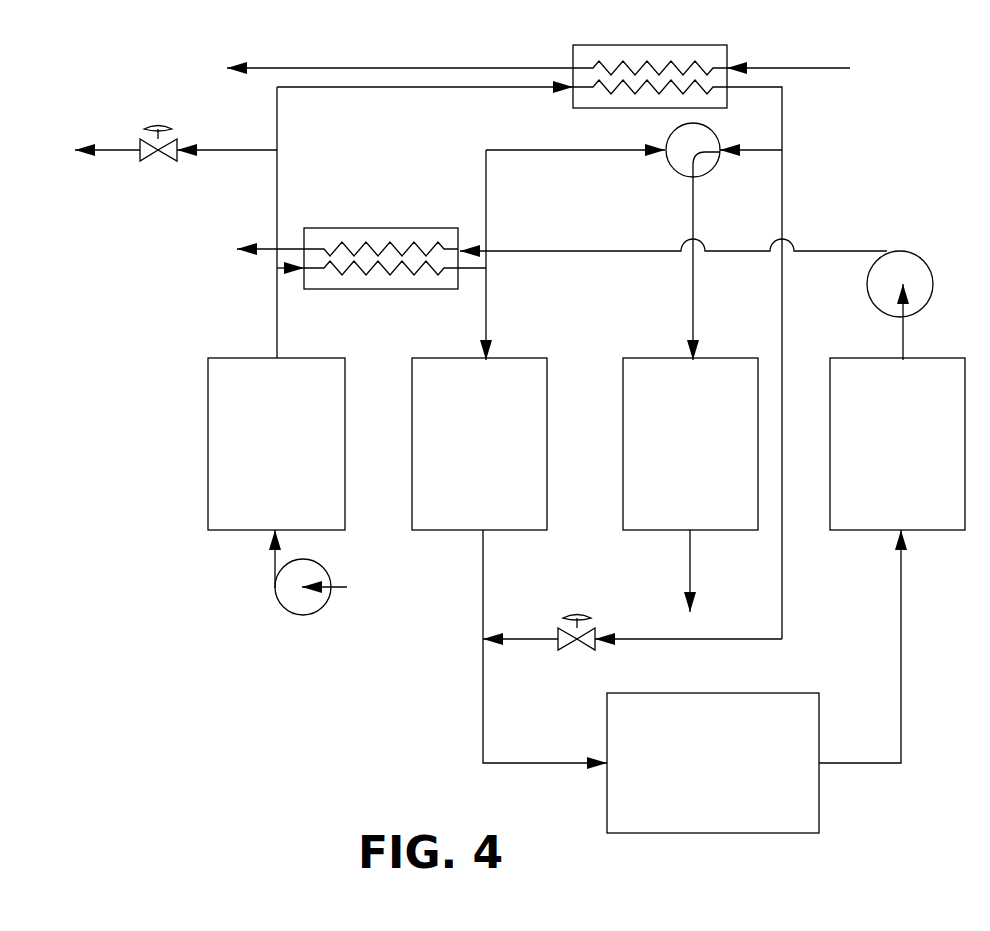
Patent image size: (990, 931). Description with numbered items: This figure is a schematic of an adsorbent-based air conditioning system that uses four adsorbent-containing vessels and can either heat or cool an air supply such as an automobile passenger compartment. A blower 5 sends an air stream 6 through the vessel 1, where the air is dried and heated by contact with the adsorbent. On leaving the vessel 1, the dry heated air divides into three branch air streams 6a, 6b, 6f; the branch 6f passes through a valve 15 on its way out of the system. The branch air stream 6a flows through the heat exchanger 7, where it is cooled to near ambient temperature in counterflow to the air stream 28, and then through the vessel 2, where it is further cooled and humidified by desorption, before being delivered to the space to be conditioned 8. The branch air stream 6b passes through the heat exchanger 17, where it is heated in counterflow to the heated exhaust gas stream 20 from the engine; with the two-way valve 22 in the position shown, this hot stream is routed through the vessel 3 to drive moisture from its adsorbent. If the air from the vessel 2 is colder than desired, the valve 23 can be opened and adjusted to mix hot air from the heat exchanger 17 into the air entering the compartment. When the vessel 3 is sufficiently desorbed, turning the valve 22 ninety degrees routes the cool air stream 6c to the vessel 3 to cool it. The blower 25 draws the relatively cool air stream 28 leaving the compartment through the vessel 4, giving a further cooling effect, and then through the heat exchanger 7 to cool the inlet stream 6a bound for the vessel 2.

The vessel 1 is at (276, 444).
The vessel 2 is at (479, 444).
The vessel 3 is at (690, 485).
The vessel 4 is at (897, 444).
The blower 5 is at (322, 609).
The air stream 6 is at (275, 565).
The branch air stream 6a is at (292, 270).
The branch air stream 6b is at (278, 197).
The cool air stream 6c is at (545, 150).
The branch air stream 6f is at (222, 152).
The heat exchanger 7 is at (412, 228).
The space to be conditioned 8 is at (800, 693).
The valve 15 is at (148, 163).
The heat exchanger 17 is at (667, 45).
The heated gas stream 20 is at (786, 68).
The two-way valve 22 is at (712, 168).
The valve 23 is at (592, 635).
The blower 25 is at (928, 270).
The air stream 28 is at (570, 251).